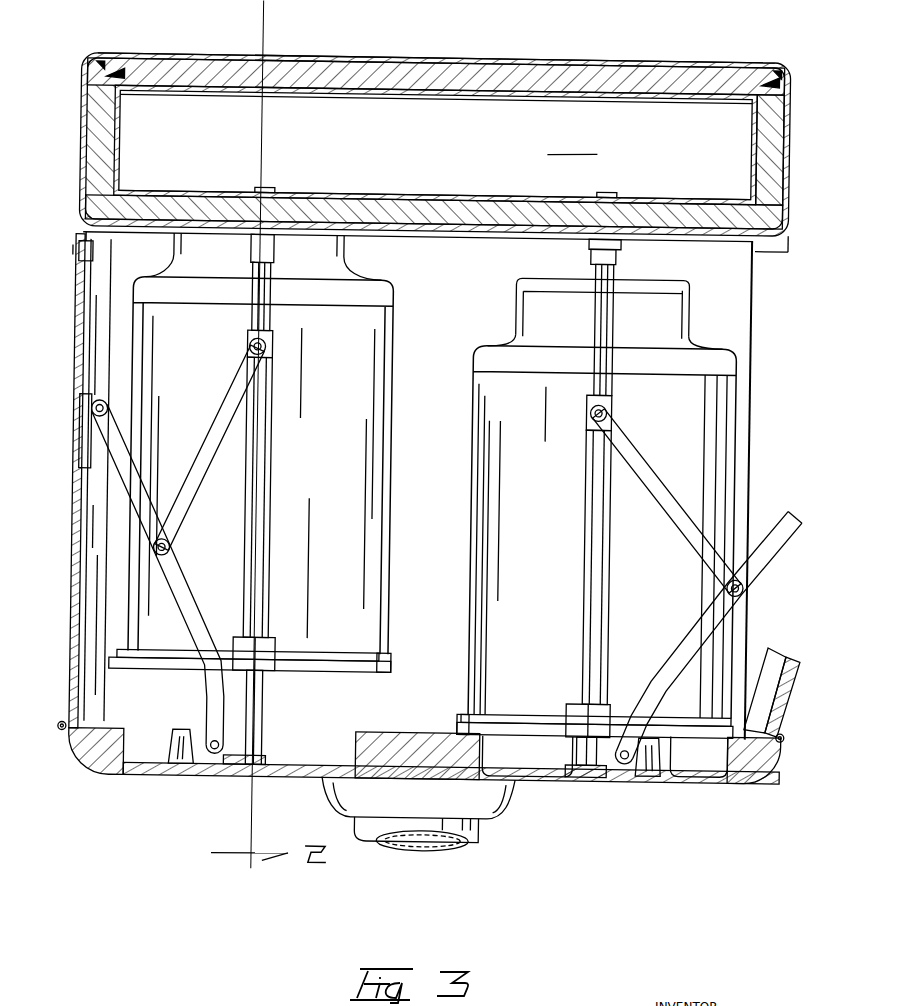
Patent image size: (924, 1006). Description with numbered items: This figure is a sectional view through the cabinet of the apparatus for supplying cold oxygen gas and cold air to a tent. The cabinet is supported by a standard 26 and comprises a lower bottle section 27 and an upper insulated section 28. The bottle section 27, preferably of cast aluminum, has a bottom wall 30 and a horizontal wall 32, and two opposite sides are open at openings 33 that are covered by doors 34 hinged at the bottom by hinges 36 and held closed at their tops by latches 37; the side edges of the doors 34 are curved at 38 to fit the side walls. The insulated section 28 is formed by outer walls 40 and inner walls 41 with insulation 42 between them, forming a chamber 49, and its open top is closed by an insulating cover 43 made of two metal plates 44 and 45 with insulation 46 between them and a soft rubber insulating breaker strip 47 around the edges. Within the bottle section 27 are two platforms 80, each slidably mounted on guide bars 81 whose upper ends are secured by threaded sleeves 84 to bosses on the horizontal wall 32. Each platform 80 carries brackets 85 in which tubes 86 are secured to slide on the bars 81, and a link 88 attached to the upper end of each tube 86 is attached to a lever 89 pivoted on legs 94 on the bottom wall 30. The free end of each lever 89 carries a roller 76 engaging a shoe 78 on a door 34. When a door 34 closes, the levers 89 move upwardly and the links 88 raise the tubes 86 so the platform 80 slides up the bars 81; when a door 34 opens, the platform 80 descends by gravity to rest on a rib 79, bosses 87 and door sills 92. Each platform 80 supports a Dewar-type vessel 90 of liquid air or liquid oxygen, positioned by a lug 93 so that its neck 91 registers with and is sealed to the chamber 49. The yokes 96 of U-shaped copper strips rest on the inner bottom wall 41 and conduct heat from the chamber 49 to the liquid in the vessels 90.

The standard 26 is at (487, 835).
The bottle section 27 is at (415, 355).
The insulated section 28 is at (382, 158).
The bottom wall 30 is at (300, 780).
The horizontal wall 32 is at (430, 237).
The opening 33 is at (772, 318).
The door 34 is at (73, 438).
The hinge 36 is at (64, 735).
The latch 37 is at (76, 252).
The curved side edge 38 is at (88, 600).
The outer wall 40 is at (80, 143).
The inner wall 41 is at (442, 195).
The insulation 42 is at (96, 155).
The insulating cover 43 is at (494, 63).
The metal plate 44 is at (257, 58).
The metal plate 45 is at (232, 99).
The insulation 46 is at (482, 80).
The insulating breaker strip 47 is at (100, 70).
The chamber 49 is at (514, 163).
The roller 76 is at (107, 414).
The shoe 78 is at (80, 414).
The rib 79 is at (385, 736).
The platform 80 is at (372, 674).
The guide bar 81 is at (251, 292).
The threaded sleeve 84 is at (271, 256).
The bracket 85 is at (262, 652).
The tube 86 is at (271, 444).
The boss 87 is at (190, 733).
The link 88 is at (232, 392).
The lever 89 is at (176, 585).
The vessel 90 is at (500, 480).
The neck 91 is at (347, 252).
The door sill 92 is at (120, 733).
The lug 93 is at (394, 660).
The leg 94 is at (220, 757).
The yoke 96 is at (263, 190).